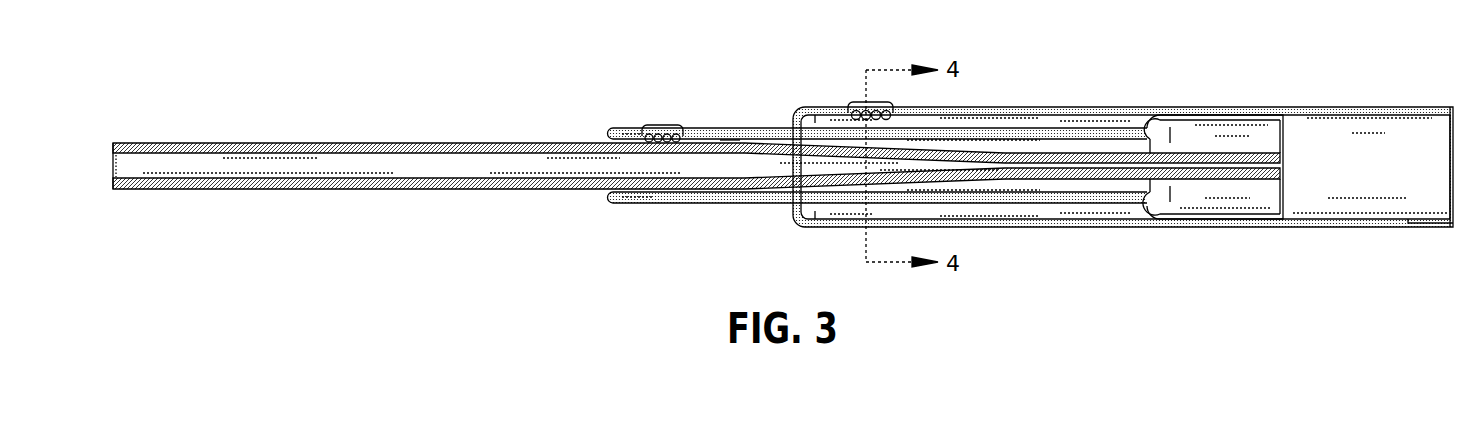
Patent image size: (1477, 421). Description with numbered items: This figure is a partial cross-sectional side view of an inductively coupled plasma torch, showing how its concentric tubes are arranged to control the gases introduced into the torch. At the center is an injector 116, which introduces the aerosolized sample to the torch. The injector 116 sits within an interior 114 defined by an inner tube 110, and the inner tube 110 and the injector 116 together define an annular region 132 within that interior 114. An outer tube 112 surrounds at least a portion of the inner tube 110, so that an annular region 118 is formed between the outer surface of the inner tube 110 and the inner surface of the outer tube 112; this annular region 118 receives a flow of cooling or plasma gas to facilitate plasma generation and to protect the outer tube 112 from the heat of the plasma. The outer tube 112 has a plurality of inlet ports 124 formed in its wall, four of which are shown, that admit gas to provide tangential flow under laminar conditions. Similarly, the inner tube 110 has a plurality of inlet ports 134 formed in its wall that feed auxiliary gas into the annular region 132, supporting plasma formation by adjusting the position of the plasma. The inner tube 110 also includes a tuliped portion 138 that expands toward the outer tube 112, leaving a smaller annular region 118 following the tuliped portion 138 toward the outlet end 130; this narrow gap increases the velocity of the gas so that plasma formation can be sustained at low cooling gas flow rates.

The inner tube 110 is at (792, 135).
The outer tube 112 is at (1015, 106).
The interior 114 is at (703, 196).
The injector 116 is at (494, 143).
The annular region 118 is at (1098, 126).
The inlet ports 124 is at (860, 102).
The outlet end 130 is at (1463, 106).
The annular region 132 is at (728, 140).
The inlet ports 134 is at (662, 126).
The tuliped portion 138 is at (1136, 100).